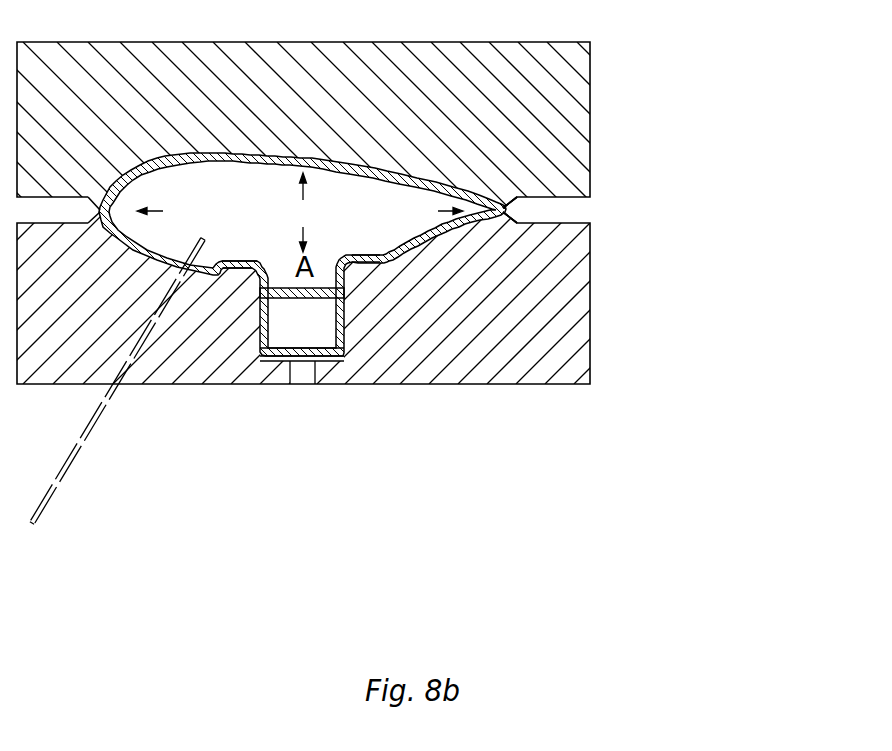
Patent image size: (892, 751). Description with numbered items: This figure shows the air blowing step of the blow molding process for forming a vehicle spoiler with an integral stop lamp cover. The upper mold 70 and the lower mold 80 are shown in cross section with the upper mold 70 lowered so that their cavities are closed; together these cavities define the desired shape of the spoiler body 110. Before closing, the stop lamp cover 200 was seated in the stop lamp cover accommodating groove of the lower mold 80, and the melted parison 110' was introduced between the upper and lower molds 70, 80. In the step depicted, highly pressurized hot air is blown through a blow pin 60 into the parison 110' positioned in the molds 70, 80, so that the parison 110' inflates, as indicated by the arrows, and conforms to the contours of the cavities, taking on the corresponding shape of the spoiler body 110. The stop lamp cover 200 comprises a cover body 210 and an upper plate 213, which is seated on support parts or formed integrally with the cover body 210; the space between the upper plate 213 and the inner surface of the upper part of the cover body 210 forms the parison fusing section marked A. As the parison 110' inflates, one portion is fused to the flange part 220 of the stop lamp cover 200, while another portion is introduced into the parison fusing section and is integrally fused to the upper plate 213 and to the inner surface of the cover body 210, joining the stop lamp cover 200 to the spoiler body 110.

The upper mold 70 is at (572, 120).
The lower mold 80 is at (588, 306).
The parison 110' is at (665, 201).
The spoiler body 110 is at (510, 210).
The stop lamp cover 200 is at (261, 350).
The cover body 210 is at (345, 325).
The upper plate 213 is at (297, 298).
The flange part 220 is at (229, 276).
The blow pin 60 is at (63, 482).